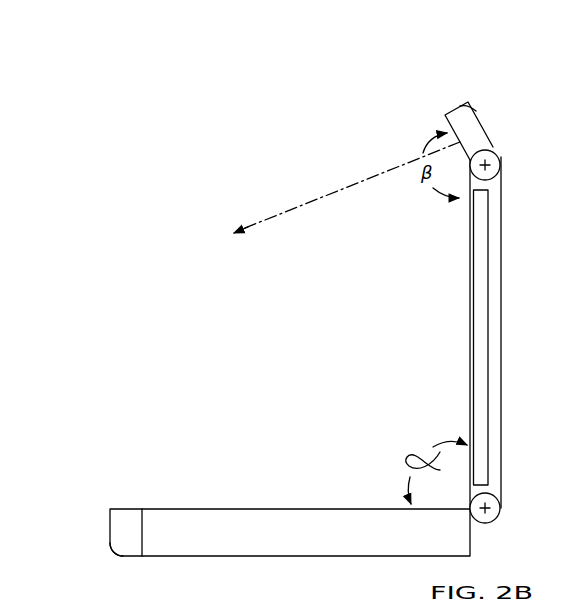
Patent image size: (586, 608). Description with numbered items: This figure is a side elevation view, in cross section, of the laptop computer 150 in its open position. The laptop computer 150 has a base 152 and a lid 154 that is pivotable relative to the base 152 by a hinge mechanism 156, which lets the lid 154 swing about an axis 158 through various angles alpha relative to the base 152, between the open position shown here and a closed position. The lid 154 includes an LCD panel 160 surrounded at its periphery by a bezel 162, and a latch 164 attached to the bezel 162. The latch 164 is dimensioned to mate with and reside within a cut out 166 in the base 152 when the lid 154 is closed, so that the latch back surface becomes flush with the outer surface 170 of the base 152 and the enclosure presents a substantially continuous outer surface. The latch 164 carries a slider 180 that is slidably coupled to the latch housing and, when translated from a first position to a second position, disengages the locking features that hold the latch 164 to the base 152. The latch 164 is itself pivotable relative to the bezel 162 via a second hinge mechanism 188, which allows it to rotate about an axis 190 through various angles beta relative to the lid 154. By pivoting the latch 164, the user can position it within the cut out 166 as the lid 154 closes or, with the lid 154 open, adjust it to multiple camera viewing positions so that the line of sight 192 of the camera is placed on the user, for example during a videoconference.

The laptop computer 150 is at (208, 298).
The base 152 is at (232, 557).
The lid 154 is at (502, 292).
The hinge mechanism 156 is at (497, 517).
The axis 158 is at (487, 527).
The LCD panel 160 is at (468, 293).
The bezel 162 is at (502, 380).
The latch 164 is at (488, 123).
The cut out 166 is at (125, 543).
The outer surface 170 is at (110, 527).
The slider 180 is at (472, 106).
The second hinge mechanism 188 is at (500, 157).
The axis 190 is at (488, 178).
The line of sight 192 is at (332, 195).